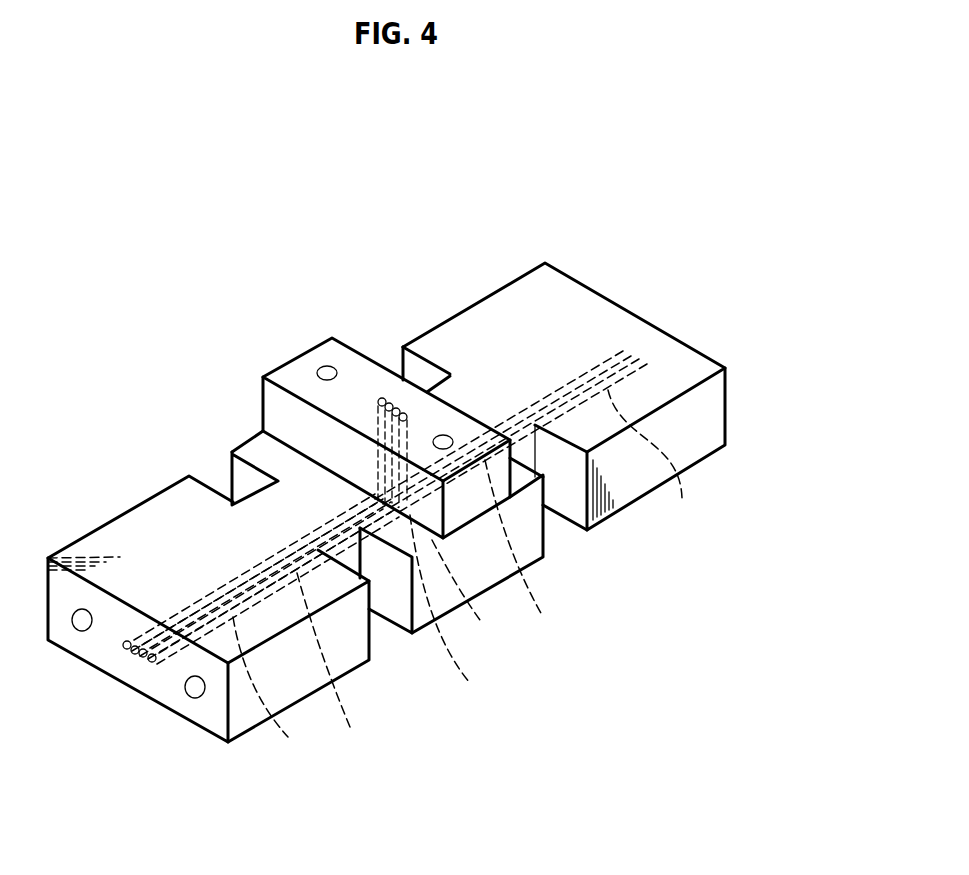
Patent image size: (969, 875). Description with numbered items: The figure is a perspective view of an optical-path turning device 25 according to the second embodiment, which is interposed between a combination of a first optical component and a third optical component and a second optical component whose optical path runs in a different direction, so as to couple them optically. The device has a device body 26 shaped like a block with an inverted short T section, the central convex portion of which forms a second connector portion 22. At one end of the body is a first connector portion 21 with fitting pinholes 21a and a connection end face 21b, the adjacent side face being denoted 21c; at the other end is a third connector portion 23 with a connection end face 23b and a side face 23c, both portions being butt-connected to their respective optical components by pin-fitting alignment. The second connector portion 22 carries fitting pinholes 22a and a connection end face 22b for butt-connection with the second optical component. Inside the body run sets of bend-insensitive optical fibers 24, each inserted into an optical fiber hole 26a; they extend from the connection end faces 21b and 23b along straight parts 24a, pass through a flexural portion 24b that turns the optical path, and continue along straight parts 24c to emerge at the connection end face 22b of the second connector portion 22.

The first connector portion 21 is at (118, 545).
The fitting pinholes 21a is at (191, 694).
The connection end face 21b is at (110, 642).
The side face of substrate 21c is at (397, 608).
The second connector portion 22 is at (301, 366).
The fitting pinholes 22a is at (327, 366).
The connection end face 22b is at (386, 372).
The third connector portion 23 is at (493, 313).
The connection end face 23b is at (728, 401).
The front face of second block 23c is at (567, 503).
The bend-insensitive optical fibers 24 is at (385, 563).
The straight part 24a is at (467, 584).
The flexural portion 24b is at (463, 612).
The straight part 24c is at (372, 411).
The optical-path turning device 25 is at (384, 240).
The device body 26 is at (275, 381).
The optical fiber hole 26a is at (549, 558).